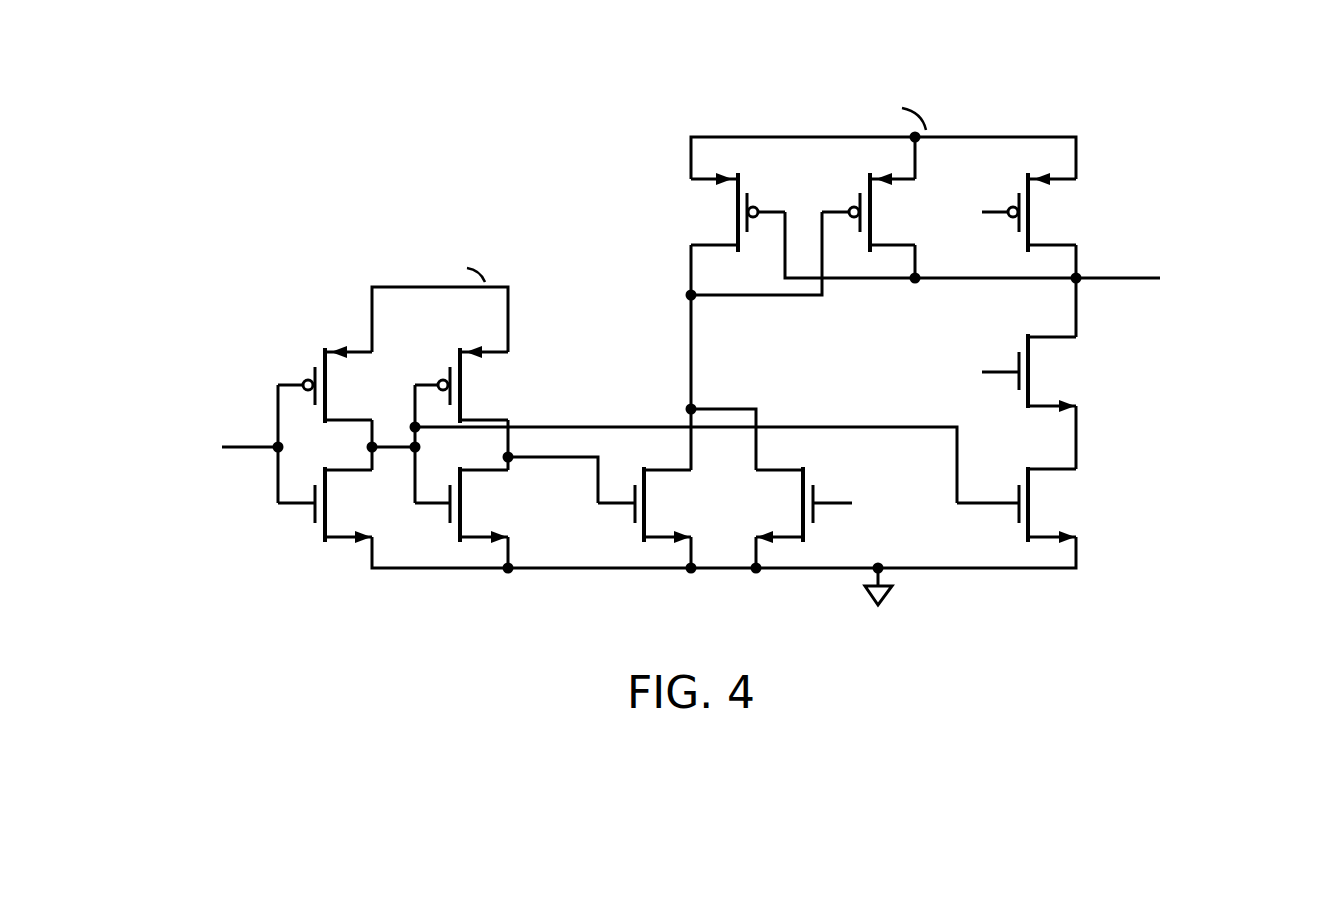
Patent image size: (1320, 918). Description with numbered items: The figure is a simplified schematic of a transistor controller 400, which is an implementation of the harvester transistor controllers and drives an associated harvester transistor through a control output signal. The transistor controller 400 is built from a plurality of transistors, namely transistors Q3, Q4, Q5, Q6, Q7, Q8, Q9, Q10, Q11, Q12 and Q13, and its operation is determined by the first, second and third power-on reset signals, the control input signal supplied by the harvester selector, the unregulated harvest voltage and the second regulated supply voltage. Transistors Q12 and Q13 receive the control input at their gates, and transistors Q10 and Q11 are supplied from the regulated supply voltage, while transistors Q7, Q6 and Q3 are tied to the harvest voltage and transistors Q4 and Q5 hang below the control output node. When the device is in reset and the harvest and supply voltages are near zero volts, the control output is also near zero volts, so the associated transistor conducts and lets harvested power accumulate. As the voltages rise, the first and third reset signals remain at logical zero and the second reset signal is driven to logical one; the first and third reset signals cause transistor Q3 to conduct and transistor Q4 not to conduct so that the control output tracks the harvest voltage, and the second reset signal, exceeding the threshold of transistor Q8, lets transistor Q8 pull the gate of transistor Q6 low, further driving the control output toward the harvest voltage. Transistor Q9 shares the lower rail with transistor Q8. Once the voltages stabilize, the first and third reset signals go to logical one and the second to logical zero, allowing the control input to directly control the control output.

The transistor controller 400 is at (412, 64).
The transistor Q3 is at (1043, 212).
The transistor Q4 is at (1048, 373).
The transistor Q5 is at (1048, 505).
The transistor Q6 is at (882, 212).
The transistor Q7 is at (724, 212).
The transistor Q8 is at (784, 505).
The transistor Q9 is at (664, 505).
The transistor Q10 is at (478, 384).
The transistor Q11 is at (484, 505).
The transistor Q12 is at (342, 384).
The transistor Q13 is at (346, 505).